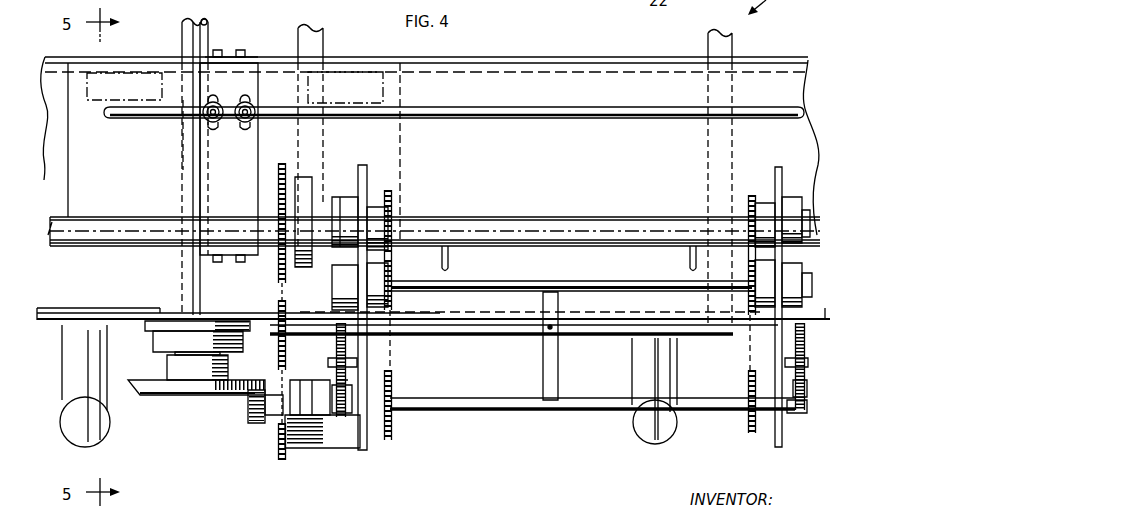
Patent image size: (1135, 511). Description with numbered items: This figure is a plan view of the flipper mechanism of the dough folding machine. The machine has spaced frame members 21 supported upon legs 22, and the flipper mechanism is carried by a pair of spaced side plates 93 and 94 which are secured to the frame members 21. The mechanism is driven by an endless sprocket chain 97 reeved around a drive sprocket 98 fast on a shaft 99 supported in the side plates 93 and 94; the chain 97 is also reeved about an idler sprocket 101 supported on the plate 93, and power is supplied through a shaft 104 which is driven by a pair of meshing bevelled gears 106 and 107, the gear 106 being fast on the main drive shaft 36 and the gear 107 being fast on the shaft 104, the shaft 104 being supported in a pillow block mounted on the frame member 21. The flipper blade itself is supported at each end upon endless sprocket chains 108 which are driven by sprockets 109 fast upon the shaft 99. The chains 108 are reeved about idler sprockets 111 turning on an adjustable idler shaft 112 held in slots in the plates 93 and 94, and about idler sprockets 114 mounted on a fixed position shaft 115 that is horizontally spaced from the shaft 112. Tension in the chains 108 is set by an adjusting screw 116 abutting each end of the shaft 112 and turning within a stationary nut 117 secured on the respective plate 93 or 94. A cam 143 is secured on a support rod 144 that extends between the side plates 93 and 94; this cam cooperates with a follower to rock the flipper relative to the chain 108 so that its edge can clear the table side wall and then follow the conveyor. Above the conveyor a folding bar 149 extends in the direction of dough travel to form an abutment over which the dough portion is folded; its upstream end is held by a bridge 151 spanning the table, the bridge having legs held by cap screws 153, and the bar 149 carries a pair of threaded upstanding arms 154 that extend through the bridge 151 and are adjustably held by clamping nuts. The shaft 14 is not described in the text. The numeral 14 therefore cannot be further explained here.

The shaft 14 is at (398, 272).
The frame member 21 is at (524, 60).
The leg 22 is at (323, 48).
The main drive shaft 36 is at (186, 159).
The side plate 93 is at (367, 176).
The side plate 94 is at (782, 173).
The endless sprocket chain 97 is at (279, 296).
The drive sprocket 98 is at (282, 163).
The shaft 99 is at (460, 218).
The idler sprocket 101 is at (283, 462).
The shaft 104 is at (352, 450).
The bevelled gear 106 is at (181, 397).
The bevelled gear 107 is at (255, 426).
The endless sprocket chain 108 is at (392, 363).
The sprocket 109 is at (393, 206).
The idler sprocket 111 is at (391, 432).
The adjustable idler shaft 112 is at (707, 403).
The idler sprocket 114 is at (410, 309).
The fixed position shaft 115 is at (506, 284).
The adjusting screw 116 is at (351, 381).
The stationary nut 117 is at (358, 364).
The cam 143 is at (559, 374).
The support rod 144 is at (464, 330).
The folding bar 149 is at (546, 110).
The bridge 151 is at (259, 62).
The cap screw 153 is at (217, 50).
The threaded upstanding arm 154 is at (244, 122).